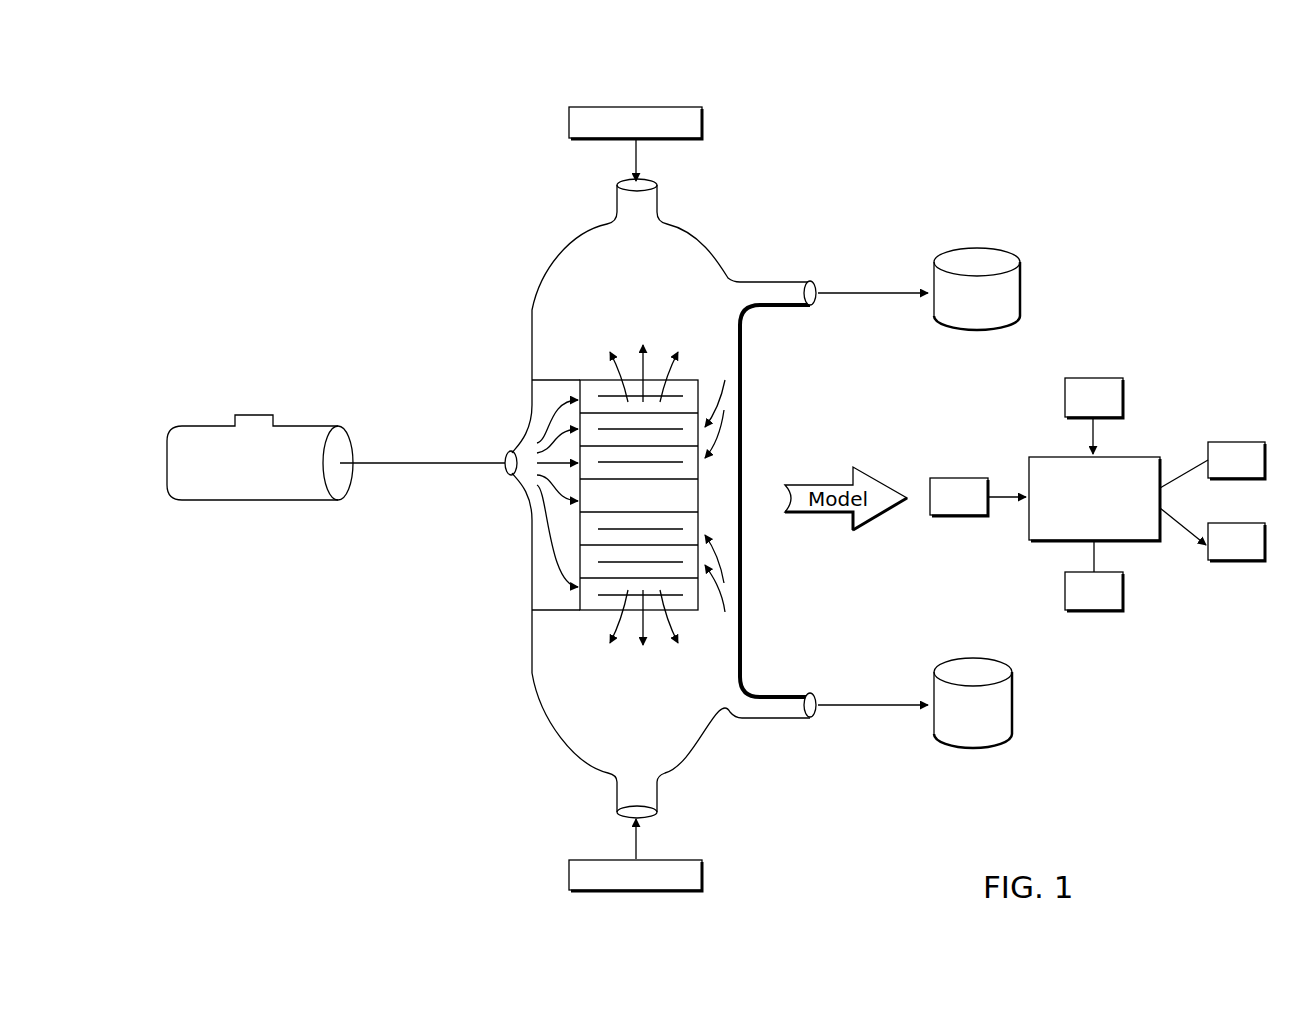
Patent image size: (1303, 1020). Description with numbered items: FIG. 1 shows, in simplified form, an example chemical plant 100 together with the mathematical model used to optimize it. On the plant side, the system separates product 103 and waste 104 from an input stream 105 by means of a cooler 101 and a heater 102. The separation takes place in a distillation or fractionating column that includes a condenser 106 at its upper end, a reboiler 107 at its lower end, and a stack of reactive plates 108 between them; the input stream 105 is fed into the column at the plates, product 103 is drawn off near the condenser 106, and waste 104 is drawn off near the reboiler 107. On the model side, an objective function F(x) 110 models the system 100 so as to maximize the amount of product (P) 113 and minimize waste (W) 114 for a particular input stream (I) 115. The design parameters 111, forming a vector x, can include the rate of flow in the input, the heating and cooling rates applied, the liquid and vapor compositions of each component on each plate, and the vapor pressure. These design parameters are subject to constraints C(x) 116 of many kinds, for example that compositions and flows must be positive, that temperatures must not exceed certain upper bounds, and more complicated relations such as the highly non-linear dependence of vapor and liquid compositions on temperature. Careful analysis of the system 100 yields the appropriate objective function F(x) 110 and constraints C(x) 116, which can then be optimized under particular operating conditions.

The chemical plant 100 is at (419, 342).
The cooler 101 is at (670, 107).
The heater 102 is at (666, 891).
The product 103 is at (1022, 300).
The waste 104 is at (1013, 710).
The input stream 105 is at (300, 500).
The condenser 106 is at (702, 254).
The reboiler 107 is at (702, 745).
The reactive plates 108 is at (628, 495).
The objective function F(x) 110 is at (1035, 456).
The design parameters 111 is at (1105, 377).
The product (P) 113 is at (1240, 441).
The waste (W) 114 is at (1252, 561).
The input stream (I) 115 is at (960, 517).
The constraints C(x) 116 is at (1100, 611).